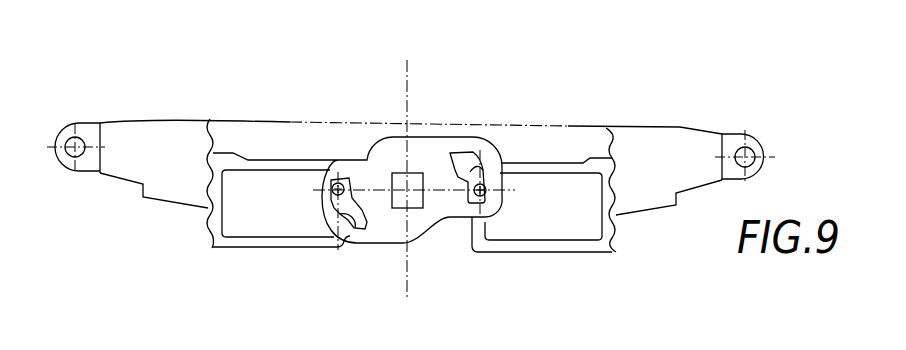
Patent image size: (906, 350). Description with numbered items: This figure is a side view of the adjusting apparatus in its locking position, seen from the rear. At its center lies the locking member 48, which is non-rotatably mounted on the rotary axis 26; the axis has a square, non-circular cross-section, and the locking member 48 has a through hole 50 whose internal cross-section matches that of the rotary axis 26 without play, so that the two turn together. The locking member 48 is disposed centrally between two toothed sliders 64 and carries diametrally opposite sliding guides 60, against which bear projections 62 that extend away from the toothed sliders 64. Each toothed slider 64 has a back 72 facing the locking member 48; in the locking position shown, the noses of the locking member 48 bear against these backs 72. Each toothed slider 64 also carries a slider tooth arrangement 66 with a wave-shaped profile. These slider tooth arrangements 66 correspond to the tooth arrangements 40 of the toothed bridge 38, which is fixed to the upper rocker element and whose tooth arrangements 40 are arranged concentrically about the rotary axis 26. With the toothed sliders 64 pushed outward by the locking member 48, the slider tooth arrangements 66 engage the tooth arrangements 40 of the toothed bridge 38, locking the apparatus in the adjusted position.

The rotary axis 26 is at (402, 204).
The toothed bridge 38 is at (108, 133).
The tooth arrangements 40 is at (218, 134).
The locking member 48 is at (414, 147).
The through hole 50 is at (415, 203).
The sliding guides 60 is at (336, 217).
The projections 62 is at (341, 181).
The toothed sliders 64 is at (258, 167).
The slider tooth arrangement 66 is at (210, 250).
The back 72 is at (358, 232).